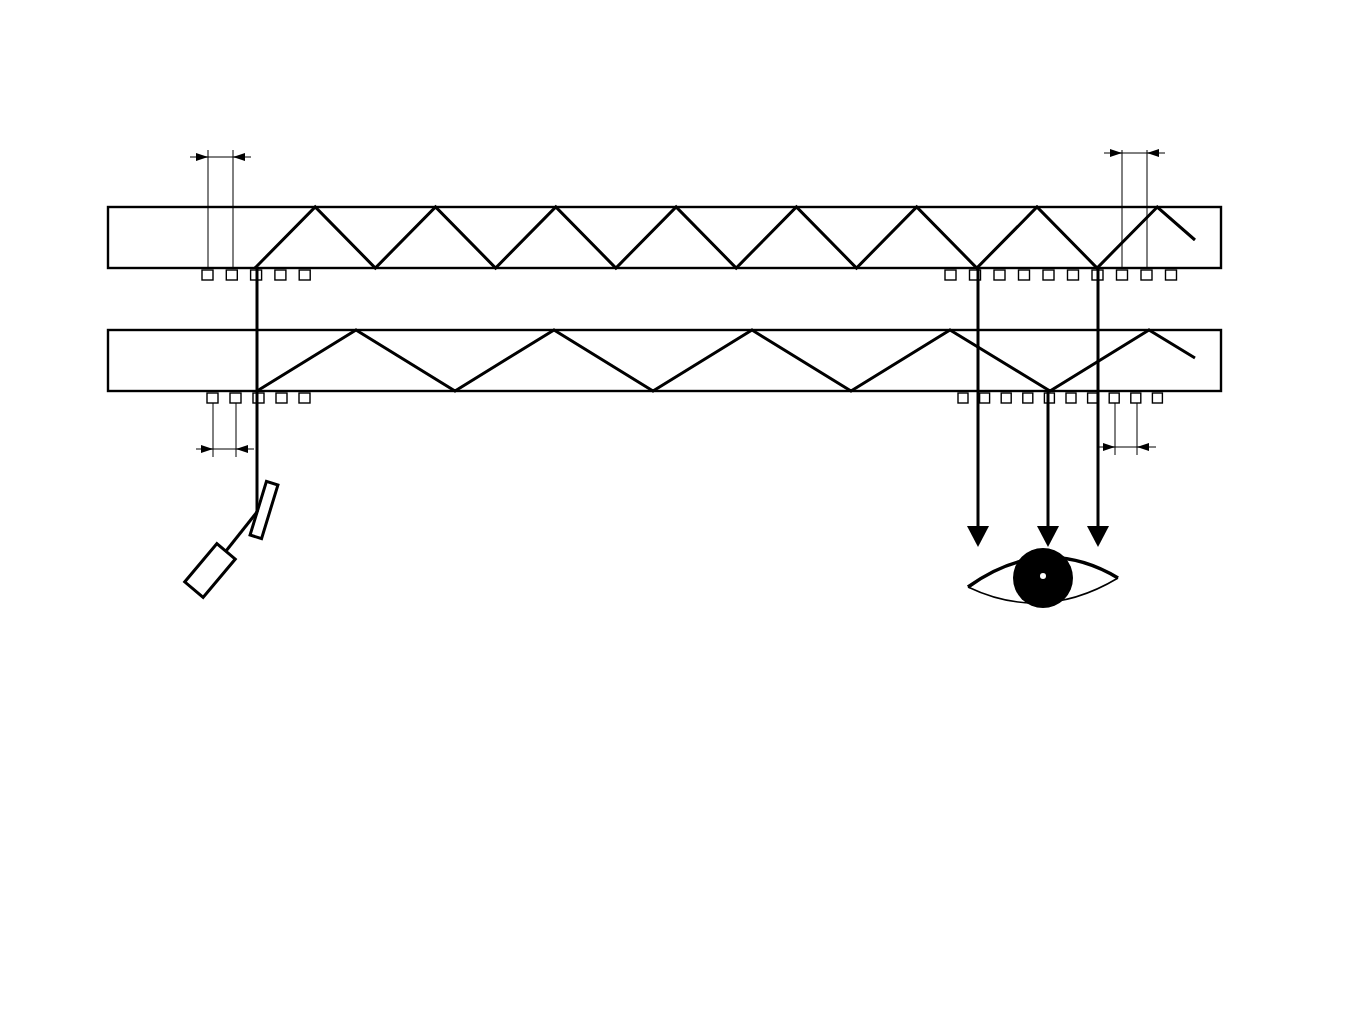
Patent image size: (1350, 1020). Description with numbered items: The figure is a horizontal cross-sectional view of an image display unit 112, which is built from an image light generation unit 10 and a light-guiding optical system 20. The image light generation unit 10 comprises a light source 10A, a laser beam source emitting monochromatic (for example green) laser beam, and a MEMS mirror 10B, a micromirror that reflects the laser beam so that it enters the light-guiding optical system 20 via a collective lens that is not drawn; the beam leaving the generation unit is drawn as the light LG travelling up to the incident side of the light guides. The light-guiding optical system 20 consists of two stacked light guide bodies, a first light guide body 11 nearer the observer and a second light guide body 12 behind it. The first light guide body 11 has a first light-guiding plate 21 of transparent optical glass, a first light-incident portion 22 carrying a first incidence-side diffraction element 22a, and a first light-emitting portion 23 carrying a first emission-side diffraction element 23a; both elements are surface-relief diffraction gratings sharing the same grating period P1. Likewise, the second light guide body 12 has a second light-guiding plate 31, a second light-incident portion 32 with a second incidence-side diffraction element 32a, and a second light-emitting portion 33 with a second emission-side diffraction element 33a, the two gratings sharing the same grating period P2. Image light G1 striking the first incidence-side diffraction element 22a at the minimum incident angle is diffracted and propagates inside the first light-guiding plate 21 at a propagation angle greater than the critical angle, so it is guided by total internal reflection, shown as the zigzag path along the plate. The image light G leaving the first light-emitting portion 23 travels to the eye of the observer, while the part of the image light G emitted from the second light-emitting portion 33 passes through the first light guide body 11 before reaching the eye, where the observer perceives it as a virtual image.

The image display unit 112 is at (685, 374).
The light-guiding optical system 20 is at (1290, 217).
The second light guide body 12 is at (662, 224).
The first light guide body 11 is at (662, 391).
The second light-guiding plate 31 is at (125, 228).
The first light-guiding plate 21 is at (128, 352).
The second light-incident portion 32 is at (227, 290).
The second incidence-side diffraction element 32a is at (310, 277).
The second light-emitting portion 33 is at (1012, 296).
The second emission-side diffraction element 33a is at (947, 275).
The first light-incident portion 22 is at (223, 412).
The first incidence-side diffraction element 22a is at (303, 398).
The first light-emitting portion 23 is at (1011, 419).
The first emission-side diffraction element 23a is at (958, 397).
The image light G1 is at (290, 230).
The image light G is at (259, 435).
The grating period P1 is at (676, 447).
The grating period P2 is at (677, 191).
The image light generation unit 10 is at (372, 540).
The light source 10A is at (212, 573).
The MEMS mirror 10B is at (262, 527).
The image light LG is at (252, 518).